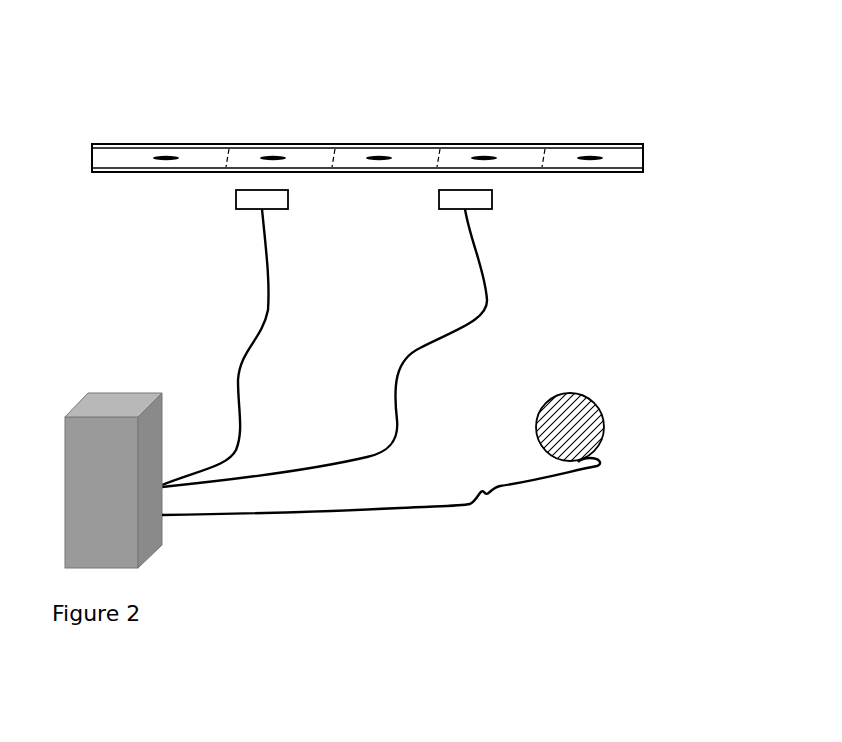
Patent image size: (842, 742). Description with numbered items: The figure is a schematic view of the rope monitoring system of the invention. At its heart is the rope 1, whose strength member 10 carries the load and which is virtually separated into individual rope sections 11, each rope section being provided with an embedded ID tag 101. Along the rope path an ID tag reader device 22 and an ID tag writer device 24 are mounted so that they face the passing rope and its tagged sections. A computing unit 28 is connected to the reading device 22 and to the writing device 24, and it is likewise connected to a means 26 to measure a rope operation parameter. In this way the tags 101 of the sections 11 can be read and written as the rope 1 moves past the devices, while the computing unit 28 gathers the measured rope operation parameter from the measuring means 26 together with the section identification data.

The rope 1 is at (180, 143).
The strength member 10 is at (628, 159).
The rope sections 11 is at (200, 153).
The ID tag 101 is at (592, 158).
The ID tag reader device 22 is at (478, 210).
The ID tag writer device 24 is at (275, 210).
The means to measure a rope operation parameter 26 is at (607, 418).
The computing unit 28 is at (120, 402).